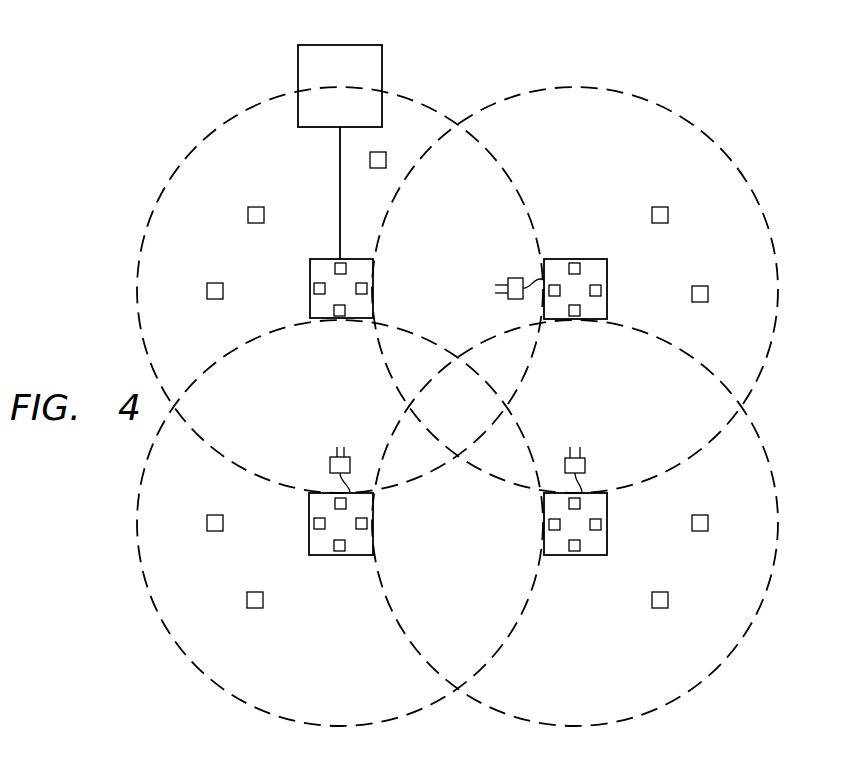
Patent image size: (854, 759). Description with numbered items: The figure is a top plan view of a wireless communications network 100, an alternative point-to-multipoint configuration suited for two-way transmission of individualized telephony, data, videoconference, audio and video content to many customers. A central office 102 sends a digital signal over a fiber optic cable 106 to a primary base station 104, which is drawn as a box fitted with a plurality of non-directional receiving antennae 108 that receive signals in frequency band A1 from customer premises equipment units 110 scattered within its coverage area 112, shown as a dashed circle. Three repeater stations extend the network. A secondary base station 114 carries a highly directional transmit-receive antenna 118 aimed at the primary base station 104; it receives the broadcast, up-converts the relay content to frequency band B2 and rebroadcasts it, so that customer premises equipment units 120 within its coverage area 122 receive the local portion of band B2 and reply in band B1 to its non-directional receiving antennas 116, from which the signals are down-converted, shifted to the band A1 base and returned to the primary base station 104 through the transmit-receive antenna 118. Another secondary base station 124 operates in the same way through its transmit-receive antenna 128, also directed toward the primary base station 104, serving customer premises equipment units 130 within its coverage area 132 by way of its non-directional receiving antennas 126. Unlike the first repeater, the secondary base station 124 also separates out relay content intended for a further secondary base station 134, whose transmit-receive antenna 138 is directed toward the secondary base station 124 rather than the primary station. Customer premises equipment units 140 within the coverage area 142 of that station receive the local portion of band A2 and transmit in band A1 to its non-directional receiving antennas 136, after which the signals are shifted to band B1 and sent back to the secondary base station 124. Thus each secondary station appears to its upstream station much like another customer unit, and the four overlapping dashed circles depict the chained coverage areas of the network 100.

The wireless communications network 100 is at (457, 370).
The central office 102 is at (357, 95).
The primary base station 104 is at (328, 259).
The fiber optic cable 106 is at (340, 165).
The non-directional receiving antennae 108 is at (335, 269).
The customer premises equipment units 110 is at (253, 207).
The coverage area 112 is at (265, 100).
The secondary base station 114 is at (309, 540).
The non-directional receiving antennas 116 is at (335, 504).
The transmit-receive antenna 118 is at (330, 464).
The customer premises equipment units 120 is at (213, 531).
The coverage area 122 is at (203, 678).
The secondary base station 124 is at (596, 259).
The non-directional receiving antennas 126 is at (555, 285).
The transmit-receive antenna 128 is at (515, 278).
The customer premises equipment units 130 is at (660, 207).
The coverage area 132 is at (657, 102).
The secondary base station 134 is at (607, 540).
The non-directional receiving antennas 136 is at (580, 504).
The transmit-receive antenna 138 is at (585, 464).
The customer premises equipment units 140 is at (700, 531).
The coverage area 142 is at (712, 675).